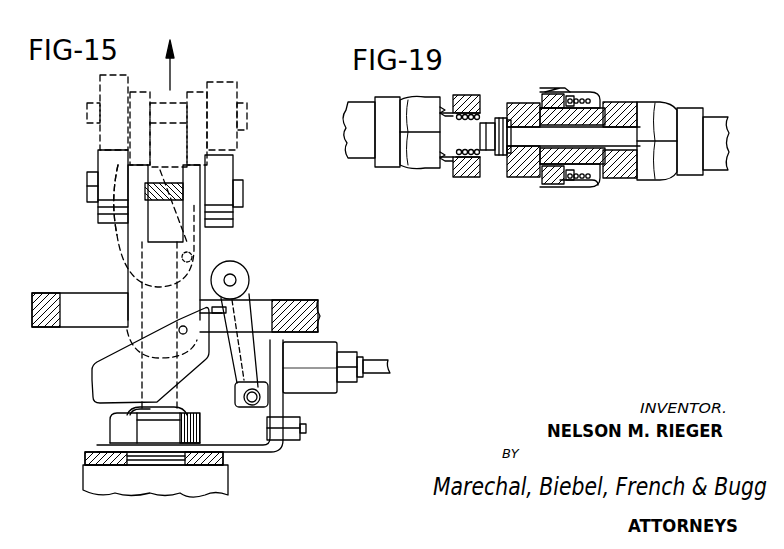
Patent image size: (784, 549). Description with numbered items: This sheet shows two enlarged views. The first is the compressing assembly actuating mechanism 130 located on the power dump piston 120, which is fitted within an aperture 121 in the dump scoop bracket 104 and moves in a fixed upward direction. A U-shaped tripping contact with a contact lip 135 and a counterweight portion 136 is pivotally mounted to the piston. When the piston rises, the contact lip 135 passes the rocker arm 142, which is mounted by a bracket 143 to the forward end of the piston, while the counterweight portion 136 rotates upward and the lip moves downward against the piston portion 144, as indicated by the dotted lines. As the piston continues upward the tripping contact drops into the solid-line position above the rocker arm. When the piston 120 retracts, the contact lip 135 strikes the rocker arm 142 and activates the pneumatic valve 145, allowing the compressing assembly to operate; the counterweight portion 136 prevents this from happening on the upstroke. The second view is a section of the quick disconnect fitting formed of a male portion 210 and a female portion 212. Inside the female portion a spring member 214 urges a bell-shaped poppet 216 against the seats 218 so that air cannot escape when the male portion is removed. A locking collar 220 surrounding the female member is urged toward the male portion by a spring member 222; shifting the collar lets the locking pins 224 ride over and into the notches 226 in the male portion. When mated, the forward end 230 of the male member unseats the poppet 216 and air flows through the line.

In FIG. 15, the bracket 104 is at (322, 315).
In FIG. 15, the power dump piston 120 is at (130, 427).
In FIG. 15, the aperture 121 is at (80, 307).
In FIG. 15, the compressing assembly actuating mechanism 130 is at (320, 403).
In FIG. 15, the contact lip 135 is at (257, 297).
In FIG. 15, the counterweight portion 136 is at (92, 380).
In FIG. 15, the rocker arm 142 is at (243, 297).
In FIG. 15, the bracket 143 is at (273, 452).
In FIG. 15, the piston portion 144 is at (130, 262).
In FIG. 15, the pneumatic valve 145 is at (327, 347).
In FIG. 19, the male portion 210 is at (620, 102).
In FIG. 19, the female portion 212 is at (468, 178).
In FIG. 19, the spring member 214 is at (482, 122).
In FIG. 19, the bell-shaped poppet 216 is at (487, 143).
In FIG. 19, the seats 218 is at (515, 147).
In FIG. 19, the locking collar 220 is at (577, 92).
In FIG. 19, the spring member 222 is at (577, 190).
In FIG. 19, the locking pins 224 is at (557, 95).
In FIG. 19, the notches 226 is at (557, 188).
In FIG. 19, the forward end 230 is at (512, 142).